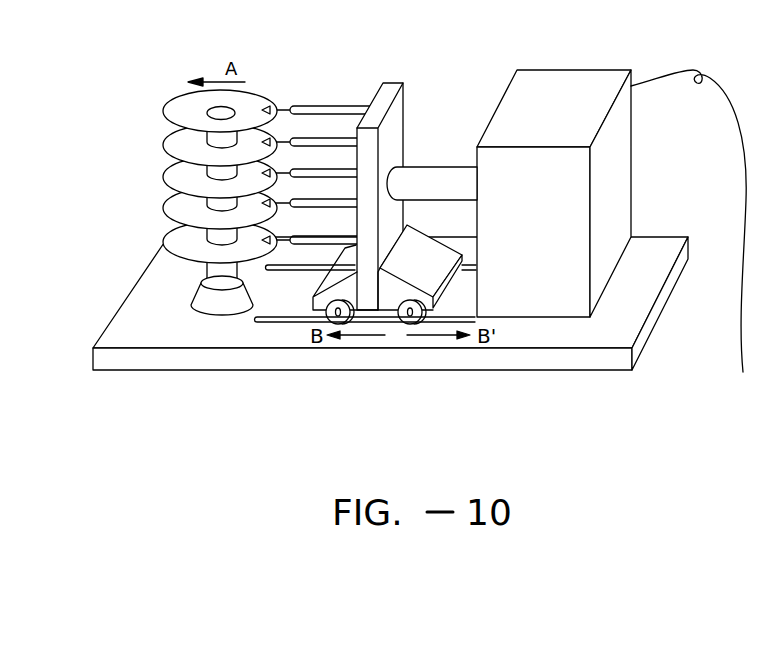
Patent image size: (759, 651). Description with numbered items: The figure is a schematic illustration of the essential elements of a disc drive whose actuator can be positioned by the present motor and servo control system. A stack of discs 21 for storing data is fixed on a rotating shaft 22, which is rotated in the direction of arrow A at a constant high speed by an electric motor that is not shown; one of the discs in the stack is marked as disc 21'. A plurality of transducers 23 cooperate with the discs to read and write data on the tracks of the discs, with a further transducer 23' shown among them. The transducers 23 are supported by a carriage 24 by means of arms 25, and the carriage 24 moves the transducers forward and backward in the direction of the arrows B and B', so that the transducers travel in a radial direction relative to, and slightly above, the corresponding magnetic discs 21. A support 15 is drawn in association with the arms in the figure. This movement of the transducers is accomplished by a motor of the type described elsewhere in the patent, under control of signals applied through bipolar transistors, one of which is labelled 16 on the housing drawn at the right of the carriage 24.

The arm support 15 is at (313, 205).
The bipolar transistor 16 is at (582, 75).
The disc 21 is at (181, 166).
The disk 21' is at (187, 177).
The rotating shaft 22 is at (231, 108).
The transducer 23 is at (255, 203).
The sensing head 23' is at (304, 122).
The carriage 24 is at (404, 105).
The arm 25 is at (356, 104).